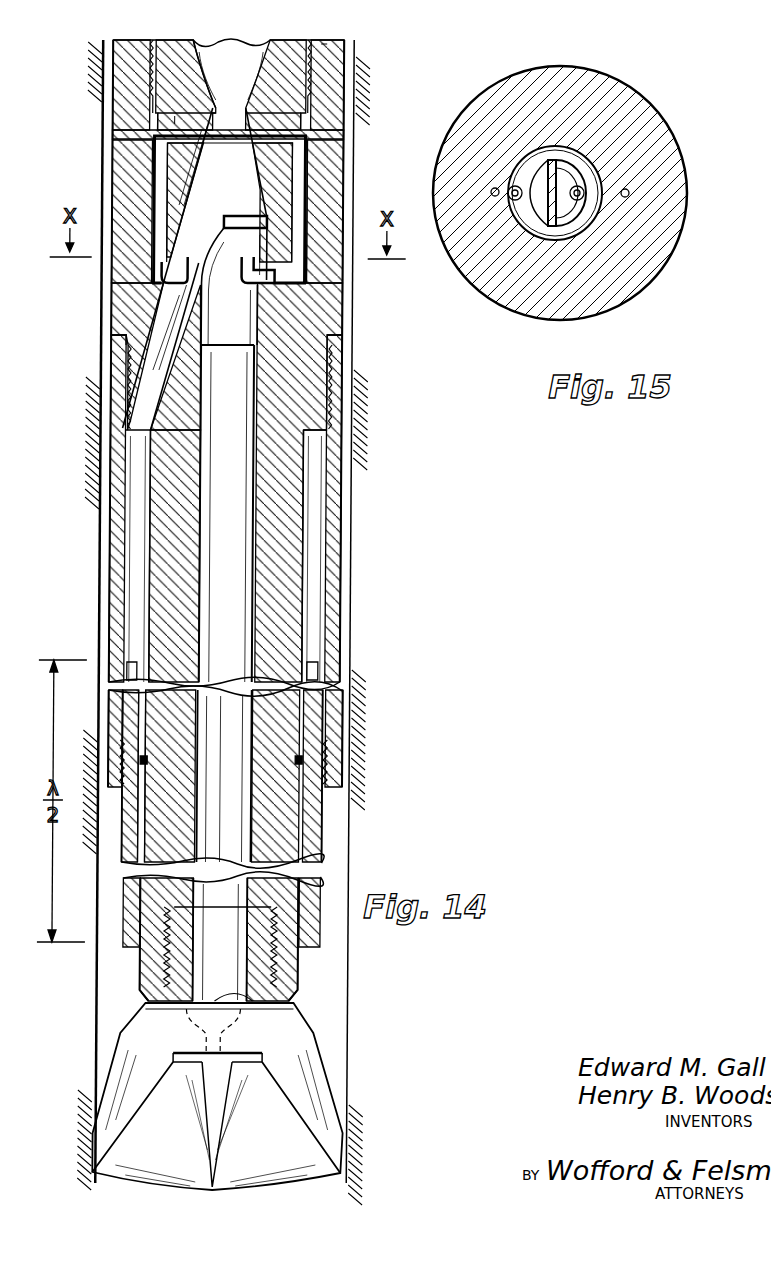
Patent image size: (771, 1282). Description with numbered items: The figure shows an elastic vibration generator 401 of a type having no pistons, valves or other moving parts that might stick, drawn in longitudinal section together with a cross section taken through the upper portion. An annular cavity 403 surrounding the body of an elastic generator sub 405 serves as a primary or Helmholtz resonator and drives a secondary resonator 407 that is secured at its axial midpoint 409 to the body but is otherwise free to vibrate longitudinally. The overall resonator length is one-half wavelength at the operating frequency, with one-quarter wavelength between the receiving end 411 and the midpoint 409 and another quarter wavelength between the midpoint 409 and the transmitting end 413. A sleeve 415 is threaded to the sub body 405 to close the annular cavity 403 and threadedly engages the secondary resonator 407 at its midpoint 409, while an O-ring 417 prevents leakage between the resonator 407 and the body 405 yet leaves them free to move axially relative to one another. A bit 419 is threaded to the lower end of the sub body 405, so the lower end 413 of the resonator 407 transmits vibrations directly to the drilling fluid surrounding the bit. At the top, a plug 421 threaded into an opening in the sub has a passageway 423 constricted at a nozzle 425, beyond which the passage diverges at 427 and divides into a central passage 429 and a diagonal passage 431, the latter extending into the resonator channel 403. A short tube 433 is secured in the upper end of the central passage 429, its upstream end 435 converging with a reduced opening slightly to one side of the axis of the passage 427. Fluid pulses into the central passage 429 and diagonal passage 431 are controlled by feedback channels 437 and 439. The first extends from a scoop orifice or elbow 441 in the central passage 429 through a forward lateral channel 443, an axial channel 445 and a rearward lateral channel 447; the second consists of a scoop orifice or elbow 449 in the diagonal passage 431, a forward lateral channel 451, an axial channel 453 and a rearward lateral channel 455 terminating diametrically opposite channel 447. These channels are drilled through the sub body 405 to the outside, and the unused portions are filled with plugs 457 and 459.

In FIG. 14, the elastic vibration generator 401 is at (96, 421).
In FIG. 14, the annular cavity 403 is at (135, 490).
In FIG. 14, the elastic generator sub 405 is at (322, 274).
In FIG. 15, the elastic generator sub 405 is at (670, 122).
In FIG. 14, the secondary resonator 407 is at (313, 830).
In FIG. 14, the axial midpoint 409 is at (326, 752).
In FIG. 14, the receiving end 411 is at (319, 658).
In FIG. 14, the transmitting end 413 is at (314, 952).
In FIG. 14, the sleeve 415 is at (334, 478).
In FIG. 14, the O-ring 417 is at (304, 760).
In FIG. 14, the bit 419 is at (316, 1077).
In FIG. 14, the plug 421 is at (303, 95).
In FIG. 14, the passageway 423 is at (226, 58).
In FIG. 14, the constriction 425 is at (205, 88).
In FIG. 14, the diverging passage 427 is at (258, 176).
In FIG. 15, the diverging passage 427 is at (543, 153).
In FIG. 14, the central passage 429 is at (232, 392).
In FIG. 14, the diagonal passage 431 is at (162, 355).
In FIG. 14, the short tube 433 is at (250, 335).
In FIG. 15, the short tube 433 is at (545, 213).
In FIG. 14, the upstream end of tube 435 is at (229, 216).
In FIG. 15, the upstream end of tube 435 is at (580, 155).
In FIG. 14, the feedback channel 437 is at (307, 205).
In FIG. 14, the feedback channel 439 is at (150, 205).
In FIG. 14, the scoop orifice or elbow 441 is at (248, 290).
In FIG. 15, the scoop orifice or elbow 441 is at (600, 205).
In FIG. 14, the forward lateral channel 443 is at (260, 315).
In FIG. 14, the axial channel 445 is at (324, 45).
In FIG. 15, the axial channel 445 is at (629, 197).
In FIG. 14, the rearward lateral channel 447 is at (274, 148).
In FIG. 14, the scoop orifice or elbow 449 is at (210, 250).
In FIG. 15, the scoop orifice or elbow 449 is at (516, 202).
In FIG. 14, the forward lateral channel 451 is at (162, 303).
In FIG. 14, the axial channel 453 is at (170, 117).
In FIG. 15, the axial channel 453 is at (493, 186).
In FIG. 14, the rearward lateral channel 455 is at (156, 88).
In FIG. 14, the plug 457 is at (160, 124).
In FIG. 14, the plug 459 is at (120, 136).